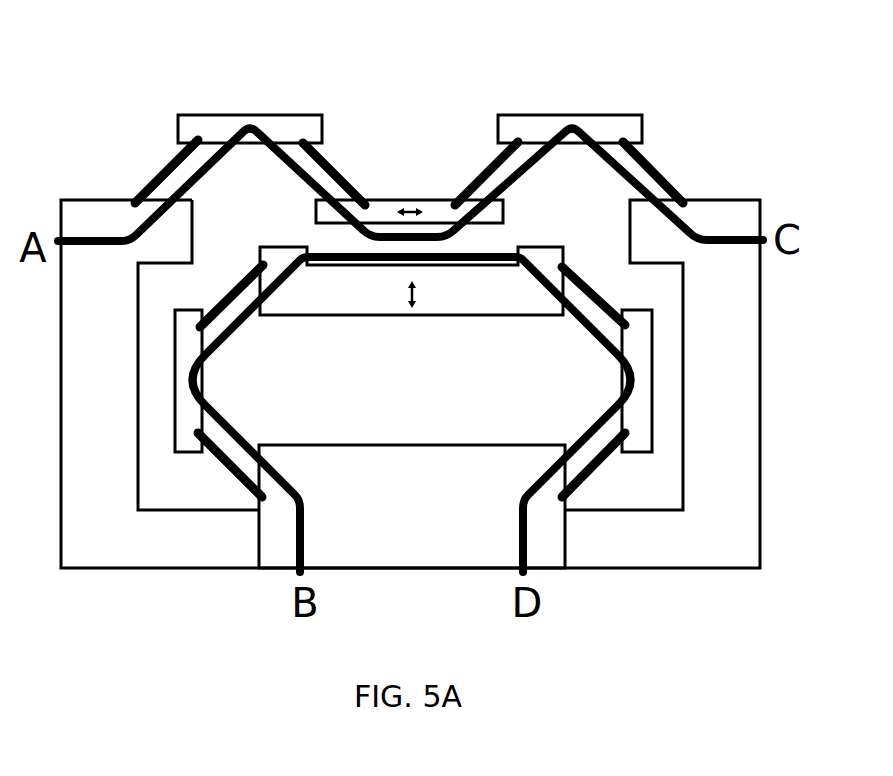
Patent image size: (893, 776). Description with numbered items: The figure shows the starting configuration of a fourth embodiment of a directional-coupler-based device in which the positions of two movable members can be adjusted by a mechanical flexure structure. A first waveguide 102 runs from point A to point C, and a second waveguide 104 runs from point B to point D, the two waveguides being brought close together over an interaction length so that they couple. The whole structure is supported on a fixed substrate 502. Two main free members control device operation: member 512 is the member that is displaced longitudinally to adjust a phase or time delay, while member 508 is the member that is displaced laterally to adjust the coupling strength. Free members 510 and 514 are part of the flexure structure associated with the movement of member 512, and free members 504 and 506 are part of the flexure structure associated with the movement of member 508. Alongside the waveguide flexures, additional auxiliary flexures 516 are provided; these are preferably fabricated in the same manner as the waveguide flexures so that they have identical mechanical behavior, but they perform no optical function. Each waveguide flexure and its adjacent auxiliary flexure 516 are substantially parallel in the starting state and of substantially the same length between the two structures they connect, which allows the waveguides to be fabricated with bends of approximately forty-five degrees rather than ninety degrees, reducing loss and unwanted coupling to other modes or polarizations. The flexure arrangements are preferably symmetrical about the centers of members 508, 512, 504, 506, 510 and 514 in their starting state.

The first waveguide 102 is at (97, 238).
The second waveguide 104 is at (297, 545).
The fixed substrate 502 is at (393, 523).
The free member 504 is at (196, 381).
The free member 506 is at (628, 378).
The main free member 508 is at (460, 302).
The free member 510 is at (253, 115).
The main free member 512 is at (404, 200).
The free member 514 is at (573, 115).
The auxiliary flexures 516 is at (137, 200).